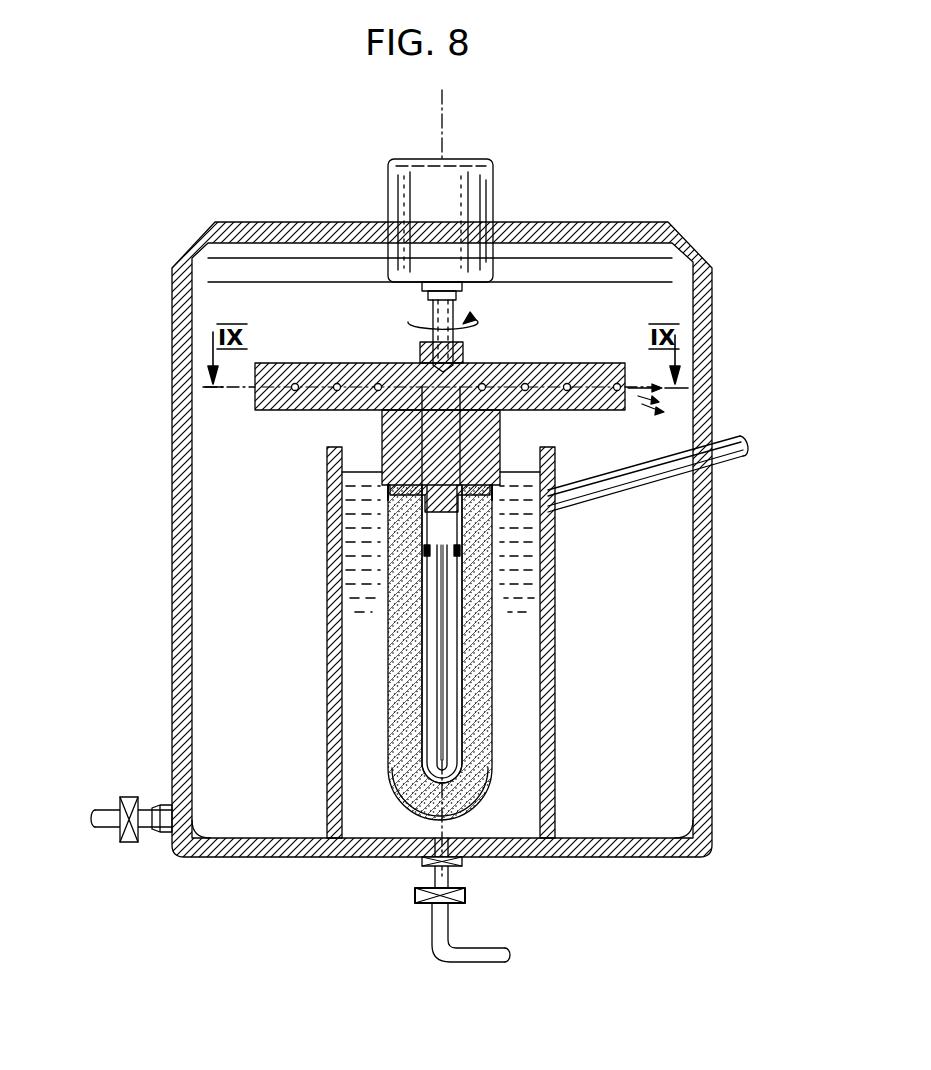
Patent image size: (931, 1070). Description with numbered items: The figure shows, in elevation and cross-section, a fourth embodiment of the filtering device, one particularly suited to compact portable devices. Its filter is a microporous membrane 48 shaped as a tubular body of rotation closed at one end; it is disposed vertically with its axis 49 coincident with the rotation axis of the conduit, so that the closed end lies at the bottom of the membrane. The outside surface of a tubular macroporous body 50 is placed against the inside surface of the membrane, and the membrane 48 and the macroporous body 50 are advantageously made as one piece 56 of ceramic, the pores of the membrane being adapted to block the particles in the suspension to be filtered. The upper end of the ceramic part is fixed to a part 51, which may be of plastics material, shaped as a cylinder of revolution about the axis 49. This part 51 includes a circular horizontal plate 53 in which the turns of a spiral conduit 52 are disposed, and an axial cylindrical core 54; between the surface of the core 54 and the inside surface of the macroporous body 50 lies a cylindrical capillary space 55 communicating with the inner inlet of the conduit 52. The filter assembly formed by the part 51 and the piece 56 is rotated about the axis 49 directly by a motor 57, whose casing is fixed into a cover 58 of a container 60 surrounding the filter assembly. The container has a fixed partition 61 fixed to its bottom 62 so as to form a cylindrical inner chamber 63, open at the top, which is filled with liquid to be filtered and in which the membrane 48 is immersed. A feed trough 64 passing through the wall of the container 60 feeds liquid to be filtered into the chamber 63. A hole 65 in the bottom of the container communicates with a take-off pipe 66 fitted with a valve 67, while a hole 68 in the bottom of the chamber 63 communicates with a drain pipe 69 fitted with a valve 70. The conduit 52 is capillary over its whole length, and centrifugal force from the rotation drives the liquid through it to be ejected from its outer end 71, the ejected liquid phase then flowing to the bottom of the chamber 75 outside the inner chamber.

The microporous membrane 48 is at (392, 643).
The axis 49 is at (438, 135).
The tubular macroporous body 50 is at (416, 603).
The part 51 is at (317, 412).
The spiral conduit 52 is at (377, 383).
The circular horizontal plate 53 is at (292, 325).
The axial cylindrical core 54 is at (440, 718).
The cylindrical capillary space 55 is at (437, 690).
The one piece 56 is at (497, 738).
The motor 57 is at (470, 186).
The cover 58 is at (597, 230).
The container 60 is at (716, 606).
The fixed partition 61 is at (556, 612).
The bottom 62 is at (628, 857).
The cylindrical inner chamber 63 is at (510, 700).
The feed trough 64 is at (635, 487).
The hole 65 is at (183, 824).
The take-off pipe 66 is at (105, 815).
The valve 67 is at (132, 797).
The hole 68 is at (448, 842).
The drain pipe 69 is at (440, 930).
The valve 70 is at (415, 893).
The outer end 71 is at (627, 386).
The chamber 75 is at (650, 775).